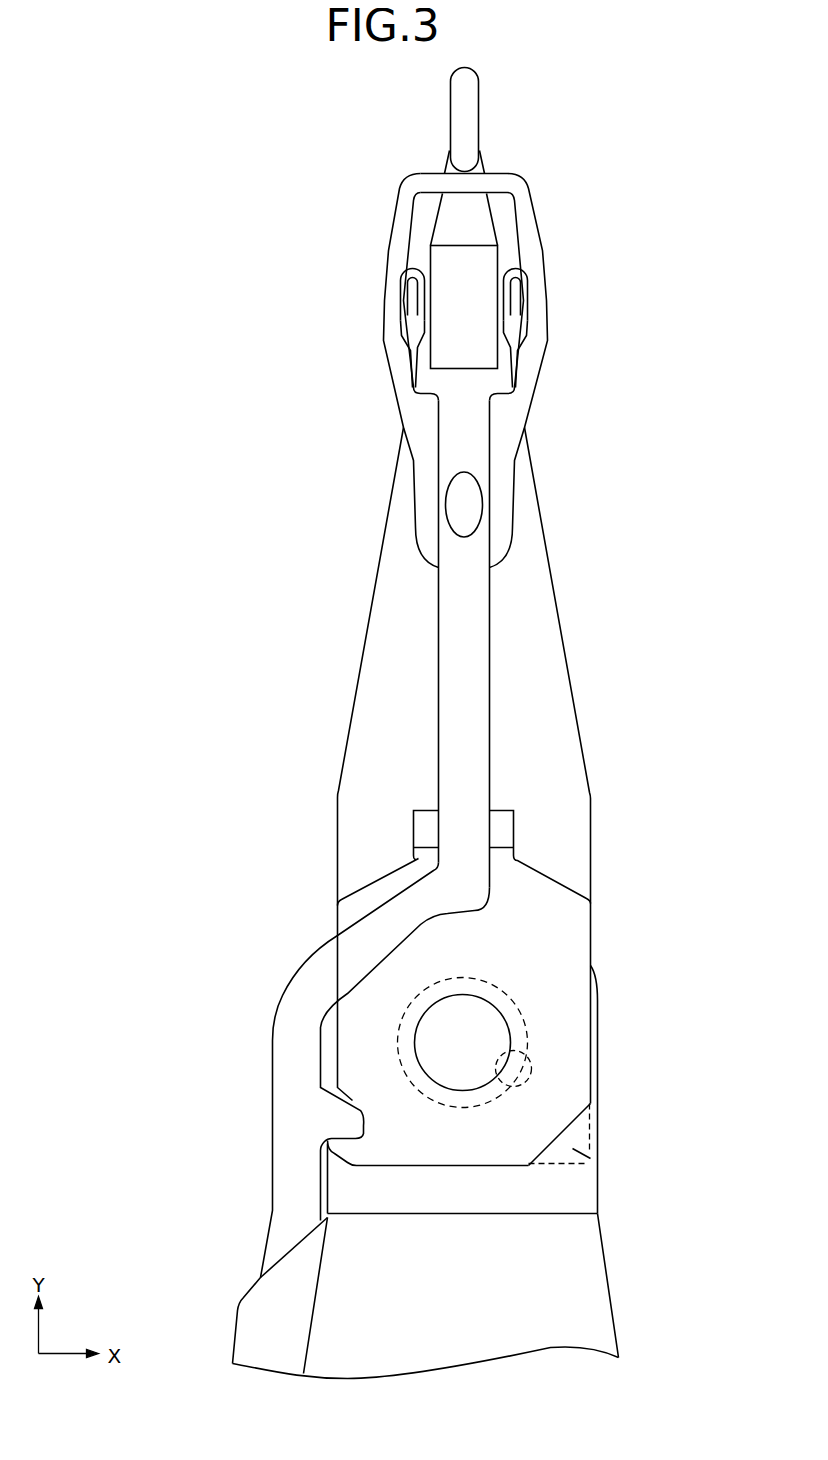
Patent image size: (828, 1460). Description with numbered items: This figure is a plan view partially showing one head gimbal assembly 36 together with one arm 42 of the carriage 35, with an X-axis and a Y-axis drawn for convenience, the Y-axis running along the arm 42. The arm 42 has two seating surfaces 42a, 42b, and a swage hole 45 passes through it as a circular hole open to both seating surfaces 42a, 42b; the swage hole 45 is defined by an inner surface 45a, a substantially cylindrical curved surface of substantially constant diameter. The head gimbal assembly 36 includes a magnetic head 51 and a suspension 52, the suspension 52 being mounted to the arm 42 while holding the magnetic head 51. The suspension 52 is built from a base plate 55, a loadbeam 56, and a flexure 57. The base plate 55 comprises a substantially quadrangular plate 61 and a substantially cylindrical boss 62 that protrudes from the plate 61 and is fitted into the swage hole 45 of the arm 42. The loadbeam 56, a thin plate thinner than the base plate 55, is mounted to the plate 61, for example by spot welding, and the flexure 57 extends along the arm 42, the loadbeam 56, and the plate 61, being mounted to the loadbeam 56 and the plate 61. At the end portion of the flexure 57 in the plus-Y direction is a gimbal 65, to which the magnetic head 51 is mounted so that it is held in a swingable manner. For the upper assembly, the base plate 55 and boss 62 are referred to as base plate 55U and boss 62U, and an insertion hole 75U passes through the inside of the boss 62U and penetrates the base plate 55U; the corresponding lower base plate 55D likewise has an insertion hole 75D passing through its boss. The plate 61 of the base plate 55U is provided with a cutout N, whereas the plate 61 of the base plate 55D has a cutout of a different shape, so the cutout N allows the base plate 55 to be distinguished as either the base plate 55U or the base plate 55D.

The head gimbal assembly 36 is at (528, 121).
The suspension 52 is at (488, 115).
The magnetic head 51 is at (488, 265).
The gimbal 65 is at (518, 290).
The flexure 57 is at (545, 332).
The loadbeam 56 is at (555, 663).
The plate 61 is at (573, 935).
The boss 62 is at (559, 1043).
The boss of upper HGA 62U is at (513, 998).
The swage hole 45 is at (607, 1062).
The inner surface 45a is at (516, 1040).
The base plate 55 is at (624, 1125).
The base plate of upper HGA 55U is at (570, 1092).
The base plate of lower HGA 55D is at (589, 1140).
The cutout N is at (592, 1159).
The seating surface 42a is at (583, 1190).
The seating surface 42b is at (582, 1205).
The arm 42 is at (590, 1280).
The carriage 35 is at (630, 1324).
The insertion hole 75U is at (344, 988).
The insertion hole 75D is at (434, 1018).